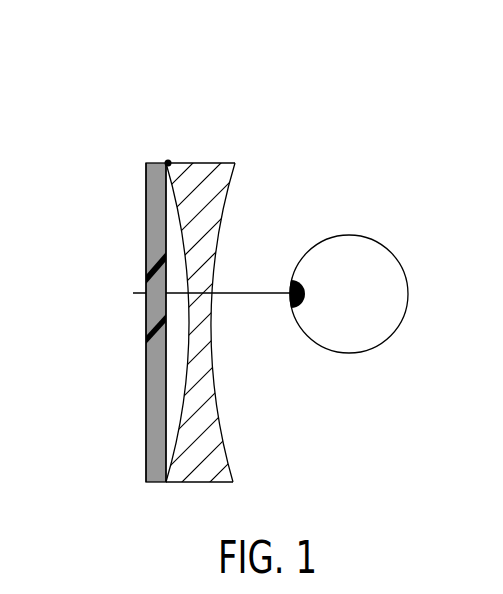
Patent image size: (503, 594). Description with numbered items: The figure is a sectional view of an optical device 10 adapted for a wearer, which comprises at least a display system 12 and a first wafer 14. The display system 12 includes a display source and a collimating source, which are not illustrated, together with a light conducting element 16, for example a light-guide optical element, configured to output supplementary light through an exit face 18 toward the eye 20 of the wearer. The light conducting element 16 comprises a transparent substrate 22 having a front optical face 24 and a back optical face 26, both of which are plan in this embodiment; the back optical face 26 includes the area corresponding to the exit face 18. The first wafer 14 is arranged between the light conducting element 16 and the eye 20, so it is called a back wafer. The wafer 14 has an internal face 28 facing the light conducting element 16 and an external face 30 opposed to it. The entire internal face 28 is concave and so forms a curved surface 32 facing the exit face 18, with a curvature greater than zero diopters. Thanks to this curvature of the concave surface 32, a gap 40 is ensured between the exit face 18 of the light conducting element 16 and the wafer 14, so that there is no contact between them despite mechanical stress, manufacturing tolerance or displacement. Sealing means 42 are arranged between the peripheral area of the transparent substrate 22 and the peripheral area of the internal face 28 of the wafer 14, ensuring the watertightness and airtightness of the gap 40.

The optical device 10 is at (240, 120).
The display system 12 is at (125, 268).
The first wafer 14 is at (213, 183).
The light conducting element 16 is at (146, 327).
The exit face 18 is at (166, 282).
The eye 20 is at (378, 321).
The transparent substrate 22 is at (157, 472).
The front optical face 24 is at (147, 410).
The back optical face 26 is at (167, 400).
The internal face 28 is at (180, 228).
The external face 30 is at (225, 440).
The curved surface 32 is at (175, 200).
The gap 40 is at (177, 318).
The sealing means 42 is at (168, 148).